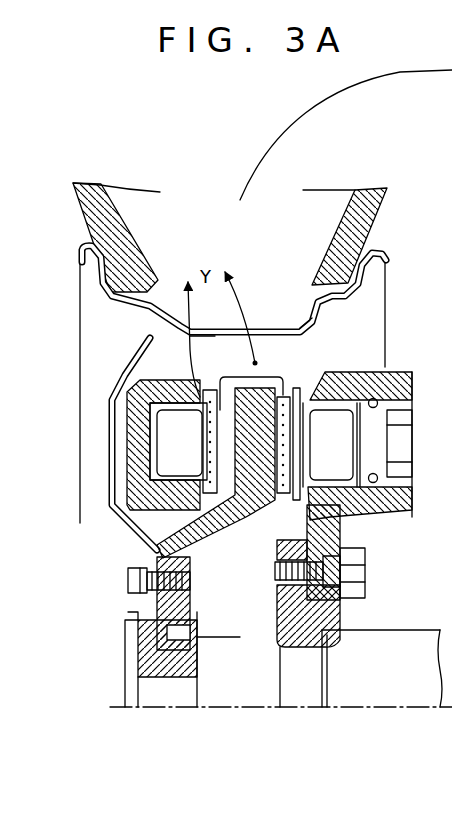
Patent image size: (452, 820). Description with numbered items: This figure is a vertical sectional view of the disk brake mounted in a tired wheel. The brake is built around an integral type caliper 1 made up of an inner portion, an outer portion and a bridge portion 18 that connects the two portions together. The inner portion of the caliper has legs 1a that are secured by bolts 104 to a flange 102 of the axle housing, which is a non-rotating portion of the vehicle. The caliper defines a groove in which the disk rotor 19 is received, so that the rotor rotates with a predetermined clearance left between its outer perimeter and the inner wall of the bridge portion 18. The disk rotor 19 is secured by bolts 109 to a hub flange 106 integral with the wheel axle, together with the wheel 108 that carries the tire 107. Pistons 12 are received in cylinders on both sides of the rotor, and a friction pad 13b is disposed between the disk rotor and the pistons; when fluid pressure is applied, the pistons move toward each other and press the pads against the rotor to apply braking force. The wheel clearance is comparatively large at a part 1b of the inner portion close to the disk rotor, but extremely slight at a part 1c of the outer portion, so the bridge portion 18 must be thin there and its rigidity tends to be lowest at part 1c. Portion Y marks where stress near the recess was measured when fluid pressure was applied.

The integral type caliper 1 is at (356, 352).
The legs 1a is at (340, 540).
The part of the inner portion 1b is at (286, 361).
The part of the outer portion 1c is at (219, 362).
The pistons 12 is at (150, 445).
The friction pad 13b is at (205, 467).
The bridge portion 18 is at (262, 395).
The disk rotor 19 is at (275, 375).
The flange of an axle housing 102 is at (286, 606).
The bolts 104 is at (356, 572).
The hub flange 106 is at (195, 612).
The tire 107 is at (110, 252).
The wheel 108 is at (110, 420).
The bolts 109 is at (127, 587).